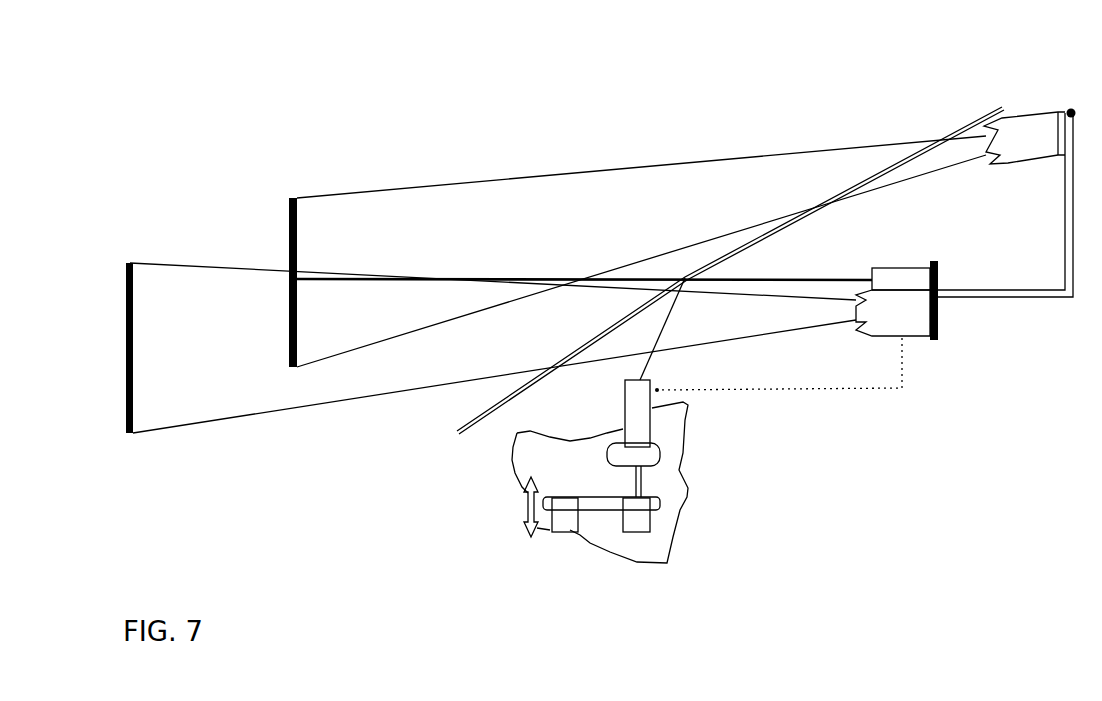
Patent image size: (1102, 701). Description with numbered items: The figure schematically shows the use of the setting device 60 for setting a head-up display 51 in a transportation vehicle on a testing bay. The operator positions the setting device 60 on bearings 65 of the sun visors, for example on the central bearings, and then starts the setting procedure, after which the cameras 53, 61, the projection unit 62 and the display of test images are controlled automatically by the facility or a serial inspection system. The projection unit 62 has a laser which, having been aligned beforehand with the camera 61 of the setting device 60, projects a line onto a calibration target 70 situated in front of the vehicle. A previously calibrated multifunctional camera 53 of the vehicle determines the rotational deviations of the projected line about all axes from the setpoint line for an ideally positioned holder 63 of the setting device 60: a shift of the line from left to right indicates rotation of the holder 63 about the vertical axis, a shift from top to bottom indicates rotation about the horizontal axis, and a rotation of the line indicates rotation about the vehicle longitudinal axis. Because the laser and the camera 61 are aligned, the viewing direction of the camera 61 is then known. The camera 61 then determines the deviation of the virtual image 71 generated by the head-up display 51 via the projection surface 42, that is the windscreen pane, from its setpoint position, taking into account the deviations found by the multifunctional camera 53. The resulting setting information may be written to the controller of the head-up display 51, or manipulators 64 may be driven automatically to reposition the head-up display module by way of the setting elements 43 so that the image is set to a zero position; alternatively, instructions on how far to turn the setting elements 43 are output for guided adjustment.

The calibration target 70 is at (289, 213).
The virtual image 71 is at (132, 430).
The projection surface 42 is at (893, 163).
The holder 63 is at (1030, 115).
The bearings 65 is at (1067, 110).
The multifunctional camera 53 is at (1067, 270).
The projection unit 62 is at (905, 268).
The camera 61 is at (913, 336).
The setting device 60 is at (1014, 330).
The manipulators 64 is at (648, 405).
The head-up display 51 is at (515, 473).
The setting elements 43 is at (601, 559).